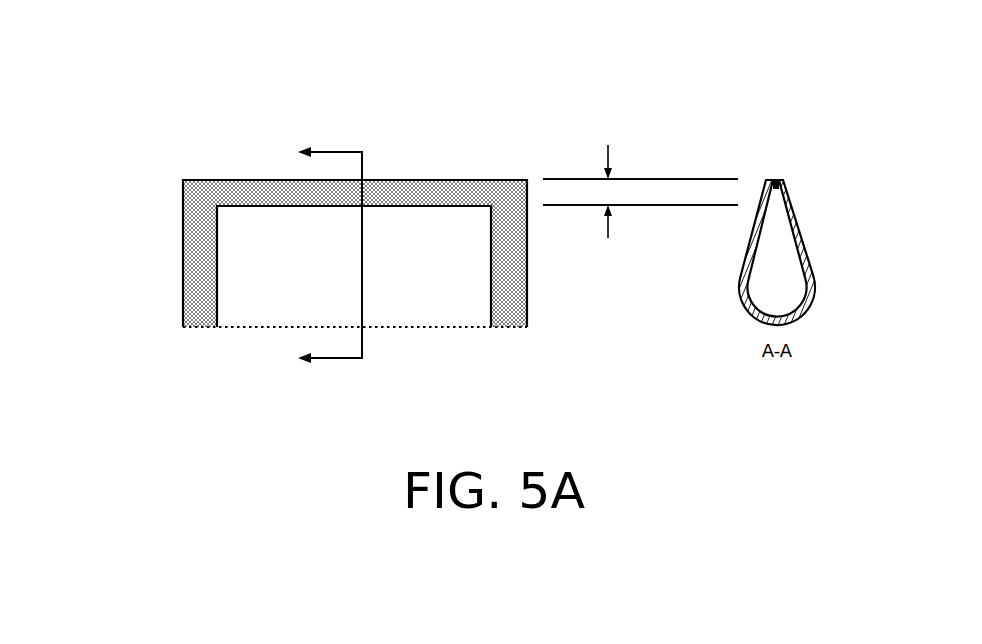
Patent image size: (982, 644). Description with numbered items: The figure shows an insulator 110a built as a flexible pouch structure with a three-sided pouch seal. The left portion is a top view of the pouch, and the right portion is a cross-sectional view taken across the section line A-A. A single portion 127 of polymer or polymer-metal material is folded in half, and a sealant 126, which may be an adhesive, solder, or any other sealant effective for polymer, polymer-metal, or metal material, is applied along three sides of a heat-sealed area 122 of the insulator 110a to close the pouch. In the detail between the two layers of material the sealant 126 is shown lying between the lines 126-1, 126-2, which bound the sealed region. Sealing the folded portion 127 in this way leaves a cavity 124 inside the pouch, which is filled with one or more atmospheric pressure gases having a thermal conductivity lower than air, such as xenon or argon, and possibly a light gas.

The insulator 110a is at (95, 151).
The heat-sealed area 122 is at (202, 245).
The cavity 124 is at (788, 292).
The sealant 126 is at (812, 148).
The first sealant layer line 126-1 is at (665, 179).
The second sealant layer line 126-2 is at (698, 205).
The single portion 127 is at (745, 310).